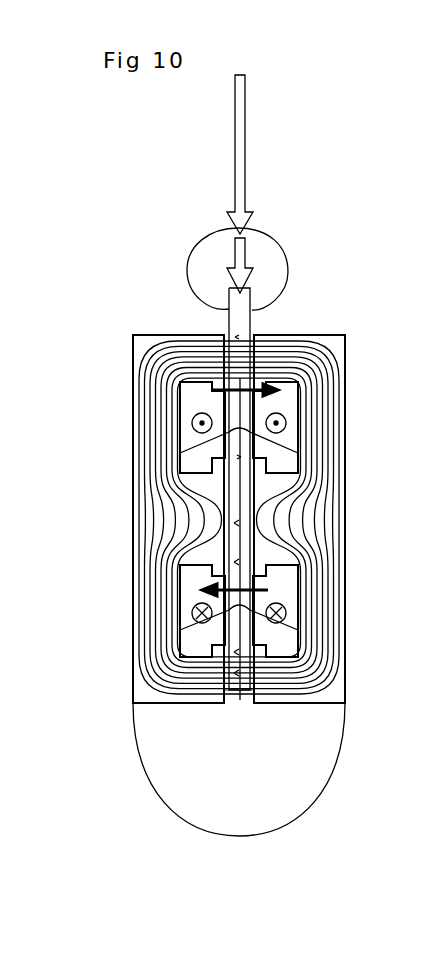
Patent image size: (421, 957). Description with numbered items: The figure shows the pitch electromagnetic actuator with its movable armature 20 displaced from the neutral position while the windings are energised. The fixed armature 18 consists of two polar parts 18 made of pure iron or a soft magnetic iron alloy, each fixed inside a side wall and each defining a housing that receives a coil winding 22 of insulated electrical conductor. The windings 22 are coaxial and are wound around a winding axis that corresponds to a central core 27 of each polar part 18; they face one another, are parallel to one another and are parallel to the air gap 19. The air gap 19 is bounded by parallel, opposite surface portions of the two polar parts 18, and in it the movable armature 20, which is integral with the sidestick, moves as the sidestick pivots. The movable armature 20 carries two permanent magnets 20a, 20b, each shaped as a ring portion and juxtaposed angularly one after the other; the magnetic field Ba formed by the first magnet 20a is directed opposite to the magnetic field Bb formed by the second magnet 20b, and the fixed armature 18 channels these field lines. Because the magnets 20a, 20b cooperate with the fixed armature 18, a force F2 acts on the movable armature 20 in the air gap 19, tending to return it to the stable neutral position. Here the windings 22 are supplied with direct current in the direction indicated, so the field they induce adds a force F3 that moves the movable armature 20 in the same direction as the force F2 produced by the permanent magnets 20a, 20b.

The fixed armature / polar parts 18 is at (133, 697).
The air gap 19 is at (243, 701).
The movable armature 20 is at (145, 504).
The first permanent magnet 20a is at (233, 316).
The second permanent magnet 20b is at (232, 618).
The coil winding 22 is at (190, 396).
The central core 27 is at (226, 507).
The magnetic field of first magnet Ba is at (238, 388).
The magnetic field of second magnet Bb is at (240, 700).
The force generated by permanent magnets F2 is at (225, 264).
The force generated by winding field F3 is at (257, 154).